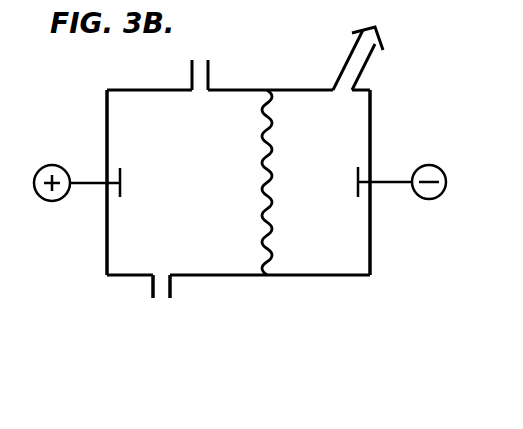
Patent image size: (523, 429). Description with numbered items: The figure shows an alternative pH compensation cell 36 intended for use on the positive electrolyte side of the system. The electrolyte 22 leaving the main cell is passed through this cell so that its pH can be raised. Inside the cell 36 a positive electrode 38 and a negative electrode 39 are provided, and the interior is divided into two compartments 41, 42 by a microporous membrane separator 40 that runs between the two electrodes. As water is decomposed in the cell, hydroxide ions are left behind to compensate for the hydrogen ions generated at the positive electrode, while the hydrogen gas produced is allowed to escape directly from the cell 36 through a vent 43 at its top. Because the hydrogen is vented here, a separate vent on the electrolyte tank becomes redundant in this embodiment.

The electrolyte 22 is at (165, 304).
The pH compensation cell 36 is at (123, 255).
The positive electrode 38 is at (90, 186).
The negative electrode 39 is at (395, 185).
The microporous membrane separator 40 is at (266, 247).
The first compartment 41 is at (120, 106).
The second compartment 42 is at (353, 114).
The vent 43 is at (371, 59).